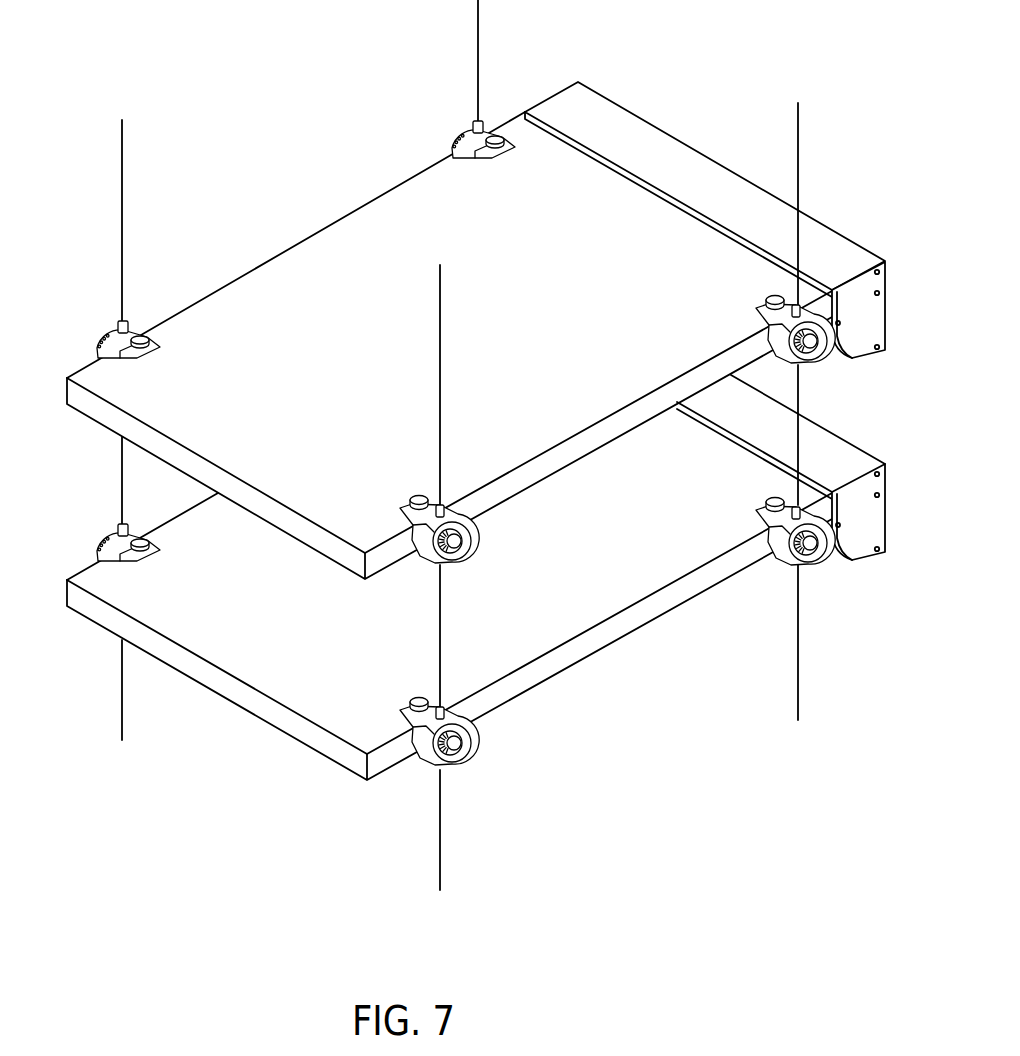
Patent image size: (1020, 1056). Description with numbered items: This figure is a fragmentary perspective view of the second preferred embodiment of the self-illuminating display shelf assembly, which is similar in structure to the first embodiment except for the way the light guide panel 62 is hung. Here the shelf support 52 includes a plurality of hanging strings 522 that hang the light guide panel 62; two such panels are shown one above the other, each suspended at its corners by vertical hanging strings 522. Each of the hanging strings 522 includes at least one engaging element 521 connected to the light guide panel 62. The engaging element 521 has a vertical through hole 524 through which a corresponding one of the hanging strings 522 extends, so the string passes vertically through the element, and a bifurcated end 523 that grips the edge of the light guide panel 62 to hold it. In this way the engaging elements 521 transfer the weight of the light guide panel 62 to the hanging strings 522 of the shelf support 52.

The shelf support 52 is at (109, 304).
The engaging element 521 is at (130, 332).
The hanging string 522 is at (123, 206).
The bifurcated end 523 is at (128, 367).
The vertical through hole 524 is at (120, 322).
The light guide panel 62 is at (384, 205).